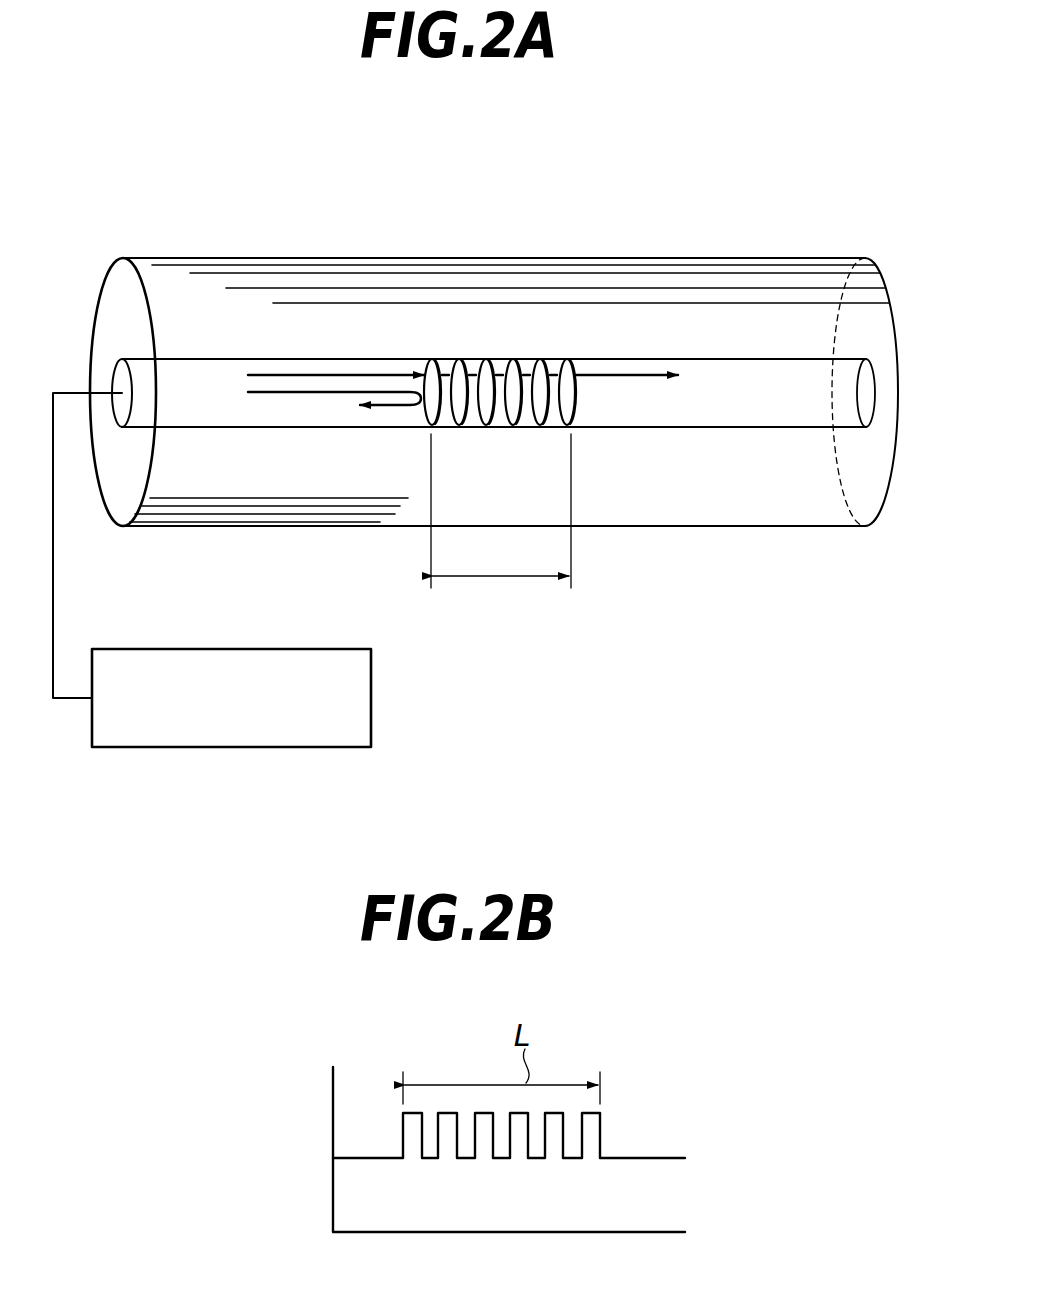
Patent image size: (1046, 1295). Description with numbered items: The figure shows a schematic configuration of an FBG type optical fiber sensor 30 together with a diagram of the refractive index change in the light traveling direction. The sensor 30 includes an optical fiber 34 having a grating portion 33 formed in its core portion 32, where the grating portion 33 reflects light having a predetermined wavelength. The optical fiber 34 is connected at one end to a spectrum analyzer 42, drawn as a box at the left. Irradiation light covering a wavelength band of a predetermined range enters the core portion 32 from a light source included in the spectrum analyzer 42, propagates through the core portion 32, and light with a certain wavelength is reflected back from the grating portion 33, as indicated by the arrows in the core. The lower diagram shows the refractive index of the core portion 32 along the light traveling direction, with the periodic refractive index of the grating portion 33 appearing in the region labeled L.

The optical fiber sensor 30 is at (838, 199).
The core portion 32 is at (735, 429).
The grating portion 33 is at (531, 578).
The optical fiber 34 is at (812, 528).
The spectrum analyzer 42 is at (372, 677).